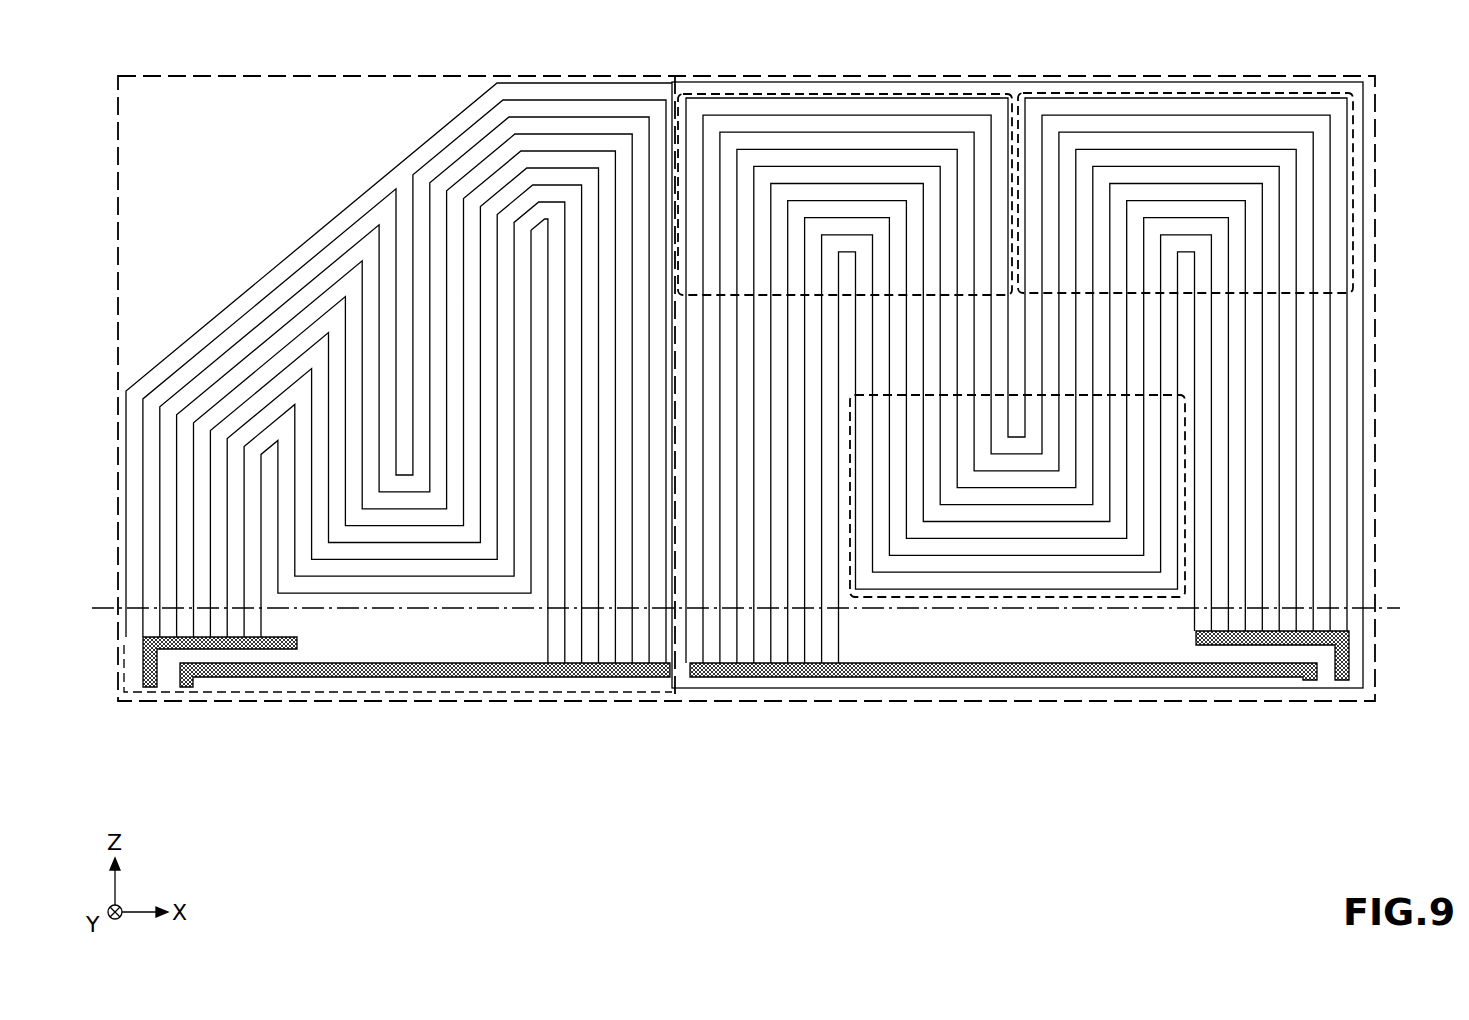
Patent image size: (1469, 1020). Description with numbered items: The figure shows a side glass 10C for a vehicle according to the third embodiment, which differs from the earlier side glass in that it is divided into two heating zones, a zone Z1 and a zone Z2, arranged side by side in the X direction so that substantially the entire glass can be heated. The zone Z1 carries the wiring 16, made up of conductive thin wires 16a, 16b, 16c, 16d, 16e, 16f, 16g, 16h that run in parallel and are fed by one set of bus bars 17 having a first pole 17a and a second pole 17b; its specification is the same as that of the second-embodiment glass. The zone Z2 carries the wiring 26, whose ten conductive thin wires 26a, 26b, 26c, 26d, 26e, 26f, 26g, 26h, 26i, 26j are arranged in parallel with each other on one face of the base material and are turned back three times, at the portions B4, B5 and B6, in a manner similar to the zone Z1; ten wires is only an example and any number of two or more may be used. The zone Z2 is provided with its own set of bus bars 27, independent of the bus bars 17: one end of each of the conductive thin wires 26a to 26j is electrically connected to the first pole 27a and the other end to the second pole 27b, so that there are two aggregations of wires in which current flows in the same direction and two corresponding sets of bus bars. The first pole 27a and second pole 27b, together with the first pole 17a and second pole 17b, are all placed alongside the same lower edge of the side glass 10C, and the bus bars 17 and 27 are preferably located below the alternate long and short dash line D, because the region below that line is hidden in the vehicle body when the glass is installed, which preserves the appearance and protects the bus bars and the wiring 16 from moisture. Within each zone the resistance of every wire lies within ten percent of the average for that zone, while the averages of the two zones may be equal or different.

The side glass 10C is at (124, 50).
The zone Z1 is at (378, 429).
The zone Z2 is at (1006, 429).
The portion B4 is at (930, 93).
The portion B5 is at (1040, 600).
The portion B6 is at (1265, 92).
The alternate long and short dash line D is at (993, 612).
The wiring 16 is at (375, 468).
The conductive thin wire 16a is at (143, 623).
The conductive thin wire 16b is at (160, 623).
The conductive thin wire 16c is at (177, 623).
The conductive thin wire 16d is at (194, 623).
The conductive thin wire 16e is at (210, 623).
The conductive thin wire 16f is at (227, 623).
The conductive thin wire 16g is at (244, 623).
The conductive thin wire 16h is at (404, 507).
The bus bars 17 is at (406, 737).
The first pole 17a is at (278, 650).
The second pole 17b is at (395, 678).
The wiring 26 is at (992, 467).
The conductive thin wire 26a is at (686, 633).
The conductive thin wire 26b is at (703, 633).
The conductive thin wire 26c is at (720, 633).
The conductive thin wire 26d is at (737, 633).
The conductive thin wire 26e is at (754, 633).
The conductive thin wire 26f is at (771, 633).
The conductive thin wire 26g is at (788, 633).
The conductive thin wire 26h is at (805, 633).
The conductive thin wire 26i is at (822, 633).
The conductive thin wire 26j is at (1016, 523).
The bus bars 27 is at (1032, 734).
The first pole 27a is at (1253, 665).
The second pole 27b is at (1342, 675).